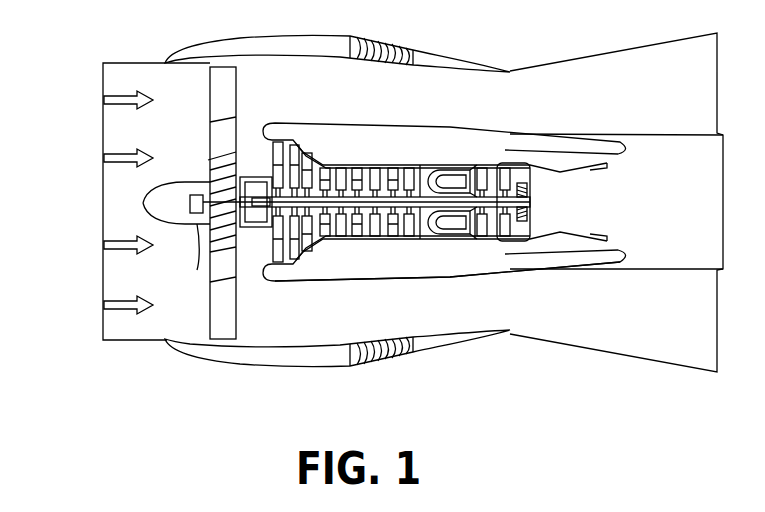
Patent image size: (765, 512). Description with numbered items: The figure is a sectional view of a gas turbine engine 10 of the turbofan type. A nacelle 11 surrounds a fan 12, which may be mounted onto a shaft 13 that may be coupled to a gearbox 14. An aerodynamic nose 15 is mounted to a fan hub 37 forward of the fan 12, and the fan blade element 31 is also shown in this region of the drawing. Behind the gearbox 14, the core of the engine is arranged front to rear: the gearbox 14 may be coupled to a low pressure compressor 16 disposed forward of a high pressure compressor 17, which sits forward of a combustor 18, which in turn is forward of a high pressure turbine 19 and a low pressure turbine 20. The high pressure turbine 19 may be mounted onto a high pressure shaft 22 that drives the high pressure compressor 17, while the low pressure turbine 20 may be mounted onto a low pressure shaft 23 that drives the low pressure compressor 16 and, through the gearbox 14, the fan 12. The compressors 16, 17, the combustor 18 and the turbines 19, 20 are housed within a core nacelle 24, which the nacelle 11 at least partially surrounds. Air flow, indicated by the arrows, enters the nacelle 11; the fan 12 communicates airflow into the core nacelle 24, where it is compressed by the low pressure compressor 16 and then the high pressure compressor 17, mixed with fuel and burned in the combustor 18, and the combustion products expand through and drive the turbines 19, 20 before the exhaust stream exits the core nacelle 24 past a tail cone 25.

The gas turbine engine 10 is at (163, 353).
The nacelle 11 is at (252, 366).
The fan 12 is at (200, 95).
The shaft 13 is at (200, 189).
The gearbox 14 is at (255, 182).
The aerodynamic nose 15 is at (157, 218).
The low pressure compressor 16 is at (312, 137).
The high pressure compressor 17 is at (368, 152).
The combustor 18 is at (444, 154).
The high pressure turbine 19 is at (484, 151).
The low pressure turbine 20 is at (517, 148).
The high pressure shaft 22 is at (457, 208).
The low pressure shaft 23 is at (518, 203).
The core nacelle 24 is at (368, 254).
The tail cone 25 is at (577, 204).
The fan blade 31 is at (223, 315).
The fan hub 37 is at (197, 270).